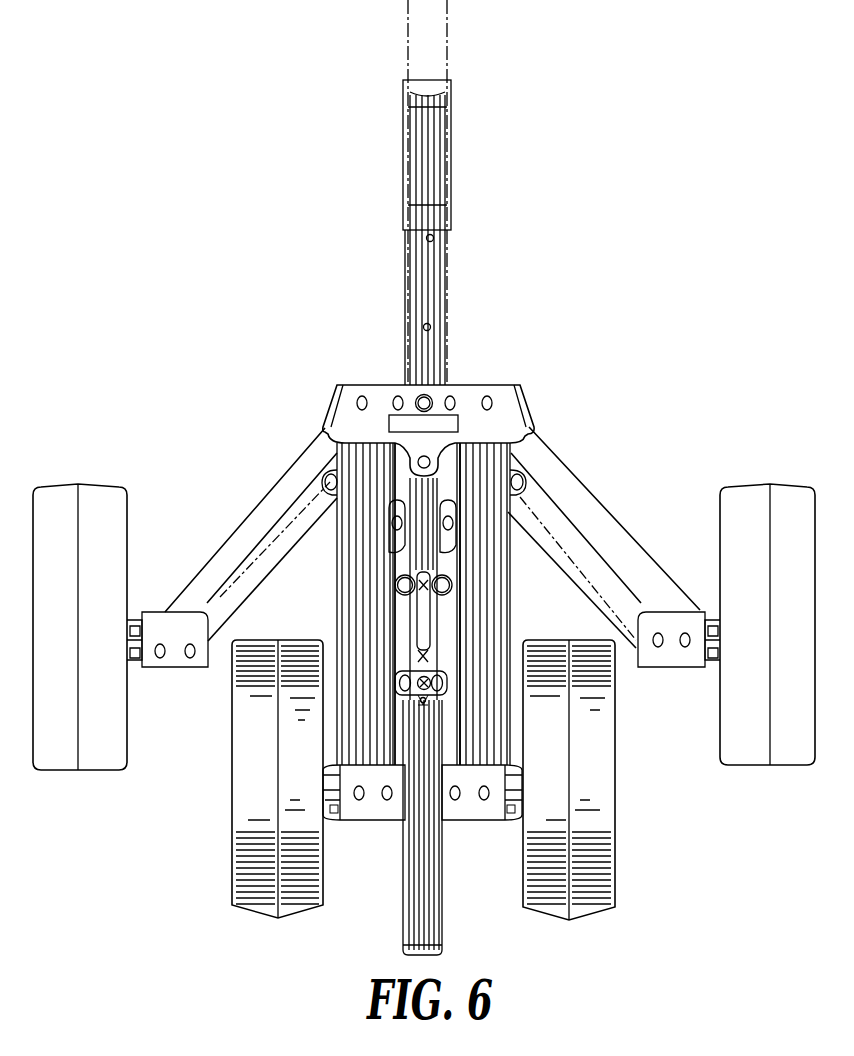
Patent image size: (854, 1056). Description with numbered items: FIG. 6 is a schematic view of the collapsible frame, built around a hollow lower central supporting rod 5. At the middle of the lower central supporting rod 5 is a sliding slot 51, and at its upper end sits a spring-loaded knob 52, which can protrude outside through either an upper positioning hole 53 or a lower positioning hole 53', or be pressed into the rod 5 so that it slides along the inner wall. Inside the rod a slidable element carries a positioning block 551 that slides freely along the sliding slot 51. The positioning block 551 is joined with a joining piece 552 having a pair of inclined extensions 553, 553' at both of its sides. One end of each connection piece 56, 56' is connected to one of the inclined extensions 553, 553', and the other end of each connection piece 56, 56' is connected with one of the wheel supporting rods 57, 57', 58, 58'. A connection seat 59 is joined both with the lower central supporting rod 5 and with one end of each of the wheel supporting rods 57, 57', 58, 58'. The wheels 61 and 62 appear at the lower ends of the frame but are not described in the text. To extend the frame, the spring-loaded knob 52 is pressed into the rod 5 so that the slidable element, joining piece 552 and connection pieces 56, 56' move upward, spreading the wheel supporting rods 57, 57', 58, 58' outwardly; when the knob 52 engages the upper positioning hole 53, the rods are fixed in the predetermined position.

The lower central supporting rod 5 is at (430, 855).
The sliding slot 51 is at (465, 622).
The spring-loaded knob 52 is at (430, 327).
The upper positioning hole 53 is at (486, 209).
The lower positioning hole 53' is at (487, 319).
The connection piece 56 is at (342, 532).
The connection piece 56' is at (533, 517).
The wheel supporting rod 57 is at (251, 520).
The wheel supporting rod 57' is at (246, 556).
The wheel supporting rod 58 is at (605, 501).
The wheel supporting rod 58' is at (611, 572).
The connection seat 59 is at (366, 393).
The left wheel 61 is at (256, 925).
The right wheel 62 is at (594, 920).
The positioning block 551 is at (453, 768).
The joining piece 552 is at (400, 700).
The inclined extension 553 is at (365, 656).
The inclined extension 553' is at (507, 653).